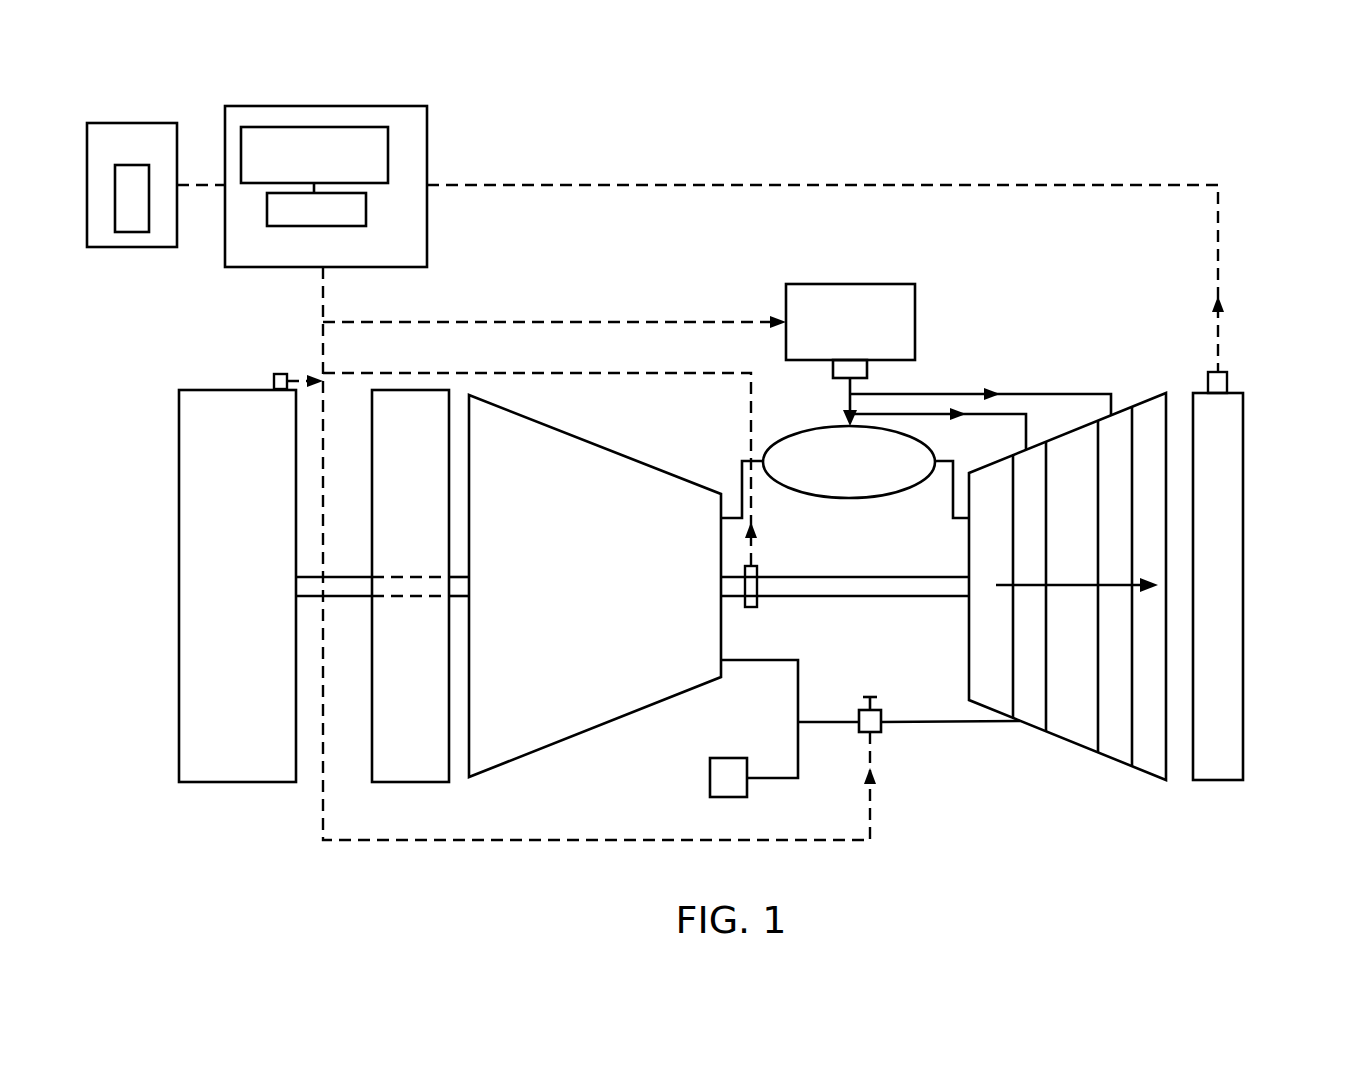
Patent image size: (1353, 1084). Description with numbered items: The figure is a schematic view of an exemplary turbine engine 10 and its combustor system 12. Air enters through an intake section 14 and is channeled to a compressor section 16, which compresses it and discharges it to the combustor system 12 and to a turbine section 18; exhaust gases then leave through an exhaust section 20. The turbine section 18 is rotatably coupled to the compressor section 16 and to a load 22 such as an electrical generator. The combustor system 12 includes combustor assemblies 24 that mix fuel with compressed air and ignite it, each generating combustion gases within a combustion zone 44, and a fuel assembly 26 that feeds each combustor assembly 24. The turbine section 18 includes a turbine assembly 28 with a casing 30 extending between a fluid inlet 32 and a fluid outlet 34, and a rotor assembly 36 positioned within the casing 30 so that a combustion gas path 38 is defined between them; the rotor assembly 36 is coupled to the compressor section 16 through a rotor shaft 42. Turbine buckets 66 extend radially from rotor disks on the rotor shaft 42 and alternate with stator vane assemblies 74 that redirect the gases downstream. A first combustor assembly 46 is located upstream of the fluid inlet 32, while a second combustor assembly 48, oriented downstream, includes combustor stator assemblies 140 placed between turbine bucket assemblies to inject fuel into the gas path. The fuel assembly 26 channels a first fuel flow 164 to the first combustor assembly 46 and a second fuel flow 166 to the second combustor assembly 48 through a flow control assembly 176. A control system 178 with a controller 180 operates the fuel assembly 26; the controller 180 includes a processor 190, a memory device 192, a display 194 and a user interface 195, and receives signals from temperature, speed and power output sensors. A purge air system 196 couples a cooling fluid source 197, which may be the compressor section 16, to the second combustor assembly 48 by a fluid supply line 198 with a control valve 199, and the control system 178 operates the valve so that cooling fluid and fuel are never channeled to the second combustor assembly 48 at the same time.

The turbine engine 10 is at (1048, 142).
The combustor system 12 is at (1075, 310).
The intake section 14 is at (405, 782).
The compressor section 16 is at (597, 735).
The turbine section 18 is at (1068, 745).
The exhaust section 20 is at (1215, 780).
The load 22 is at (202, 390).
The combustor assembly 24 is at (875, 495).
The fuel assembly 26 is at (852, 284).
The turbine assembly 28 is at (1022, 775).
The casing 30 is at (1143, 770).
The fluid inlet 32 is at (968, 636).
The fluid outlet 34 is at (1170, 783).
The rotor assembly 36 is at (880, 575).
The combustion gas path 38 is at (1075, 588).
The rotor shaft 42 is at (836, 596).
The combustion zone 44 is at (1032, 455).
The first combustor assembly 46 is at (800, 432).
The second combustor assembly 48 is at (1122, 340).
The turbine bucket 66 is at (1054, 483).
The stator vane assembly 74 is at (1016, 551).
The combustor stator assembly 140 is at (1030, 494).
The first fuel flow 164 is at (847, 405).
The second fuel flow 166 is at (975, 390).
The flow control assembly 176 is at (867, 370).
The control system 178 is at (530, 130).
The controller 180 is at (427, 130).
The processor 190 is at (320, 127).
The memory device 192 is at (366, 214).
The display 194 is at (130, 123).
The user interface 195 is at (132, 232).
The purge air system 196 is at (894, 750).
The cooling fluid source 197 is at (710, 782).
The fluid supply line 198 is at (800, 695).
The control valve 199 is at (883, 712).